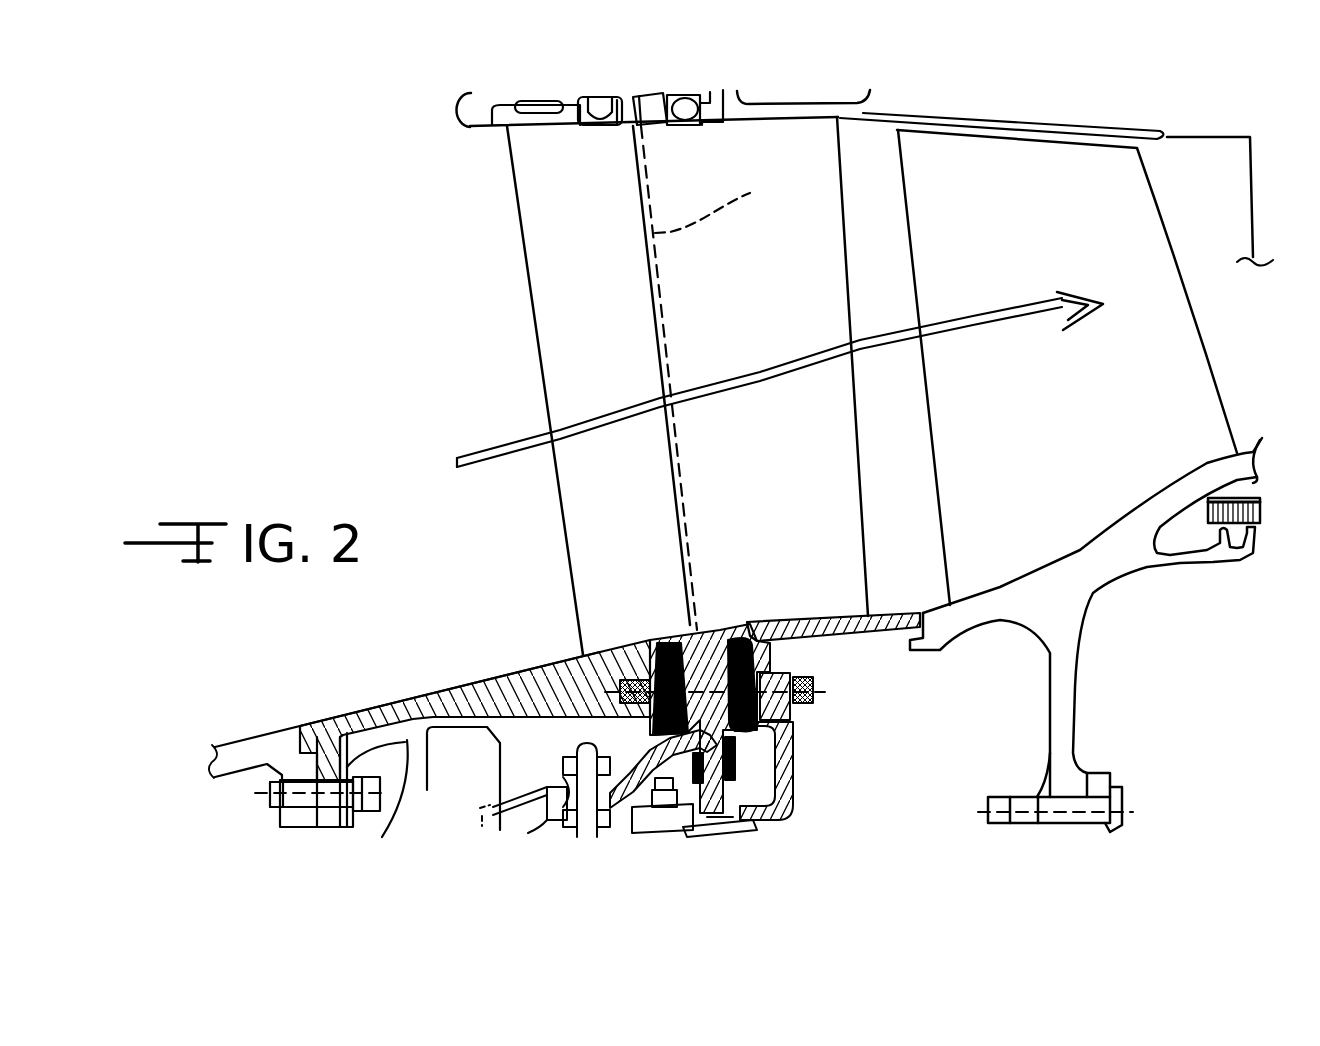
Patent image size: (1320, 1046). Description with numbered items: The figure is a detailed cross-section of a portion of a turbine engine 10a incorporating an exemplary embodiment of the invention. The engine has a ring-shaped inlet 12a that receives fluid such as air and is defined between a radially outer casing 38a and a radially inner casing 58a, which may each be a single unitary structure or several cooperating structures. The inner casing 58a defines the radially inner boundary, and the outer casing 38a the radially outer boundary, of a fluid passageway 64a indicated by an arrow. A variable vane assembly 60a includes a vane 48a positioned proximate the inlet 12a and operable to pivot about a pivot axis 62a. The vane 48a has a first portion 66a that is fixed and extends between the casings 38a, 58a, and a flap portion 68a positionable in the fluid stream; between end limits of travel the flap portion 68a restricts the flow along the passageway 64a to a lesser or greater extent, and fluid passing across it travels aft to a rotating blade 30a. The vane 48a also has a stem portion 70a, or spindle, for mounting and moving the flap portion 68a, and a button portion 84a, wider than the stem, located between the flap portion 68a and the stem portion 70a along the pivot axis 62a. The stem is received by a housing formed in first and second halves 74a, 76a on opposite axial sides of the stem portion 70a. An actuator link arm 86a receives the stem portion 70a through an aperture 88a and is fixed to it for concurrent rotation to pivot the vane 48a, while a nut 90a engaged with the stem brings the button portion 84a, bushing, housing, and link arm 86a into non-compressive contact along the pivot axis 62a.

The turbine engine 10a is at (334, 204).
The inlet 12a is at (470, 126).
The radially outer casing 38a is at (648, 90).
The rotating blade 30a is at (1060, 182).
The first portion 66a is at (545, 239).
The flap portion 68a is at (818, 201).
The pivot axis 62a is at (725, 207).
The vane 48a is at (528, 401).
The fluid passageway 64a is at (972, 315).
The variable vane assembly 60a is at (391, 437).
The radially inner casing 58a is at (424, 698).
The button portion 84a is at (727, 632).
The second half 76a is at (760, 662).
The first half 74a is at (650, 718).
The link arm 86a is at (626, 790).
The nut 90a is at (733, 768).
The stem portion 70a is at (720, 792).
The aperture 88a is at (652, 808).